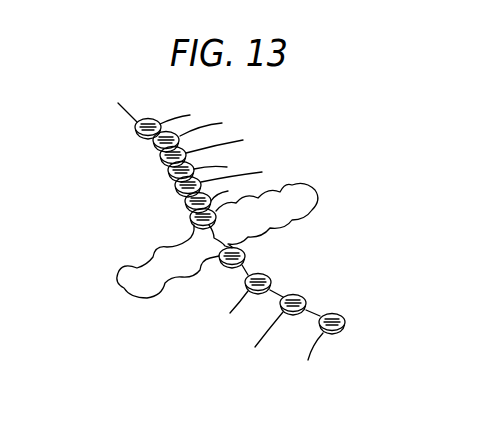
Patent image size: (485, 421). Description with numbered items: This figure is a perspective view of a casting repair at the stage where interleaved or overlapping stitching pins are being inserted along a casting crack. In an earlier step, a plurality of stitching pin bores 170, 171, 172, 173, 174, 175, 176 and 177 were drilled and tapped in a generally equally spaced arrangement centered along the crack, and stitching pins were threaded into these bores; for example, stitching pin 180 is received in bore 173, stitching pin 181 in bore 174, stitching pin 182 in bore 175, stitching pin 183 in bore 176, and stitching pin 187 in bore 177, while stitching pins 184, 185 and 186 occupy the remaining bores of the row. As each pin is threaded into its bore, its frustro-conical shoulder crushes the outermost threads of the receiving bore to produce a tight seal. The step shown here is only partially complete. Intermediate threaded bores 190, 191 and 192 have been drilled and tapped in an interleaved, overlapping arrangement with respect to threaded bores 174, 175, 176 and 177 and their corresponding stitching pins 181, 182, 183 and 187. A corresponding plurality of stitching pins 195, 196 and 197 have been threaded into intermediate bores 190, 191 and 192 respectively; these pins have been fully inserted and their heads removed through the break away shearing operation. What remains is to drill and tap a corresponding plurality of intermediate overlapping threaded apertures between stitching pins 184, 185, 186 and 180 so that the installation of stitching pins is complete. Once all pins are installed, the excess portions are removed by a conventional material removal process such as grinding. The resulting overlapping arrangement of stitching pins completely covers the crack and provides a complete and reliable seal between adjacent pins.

The stitching pin bore 170 is at (301, 357).
The stitching pin bore 171 is at (256, 340).
The stitching pin bore 172 is at (216, 317).
The stitching pin bore 173 is at (222, 264).
The stitching pin bore 174 is at (192, 224).
The stitching pin bore 175 is at (175, 189).
The stitching pin bore 176 is at (160, 157).
The stitching pin bore 177 is at (135, 130).
The stitching pin 180 is at (245, 256).
The stitching pin 181 is at (288, 187).
The stitching pin 182 is at (248, 169).
The stitching pin 183 is at (230, 142).
The stitching pin 184 is at (345, 318).
The stitching pin 185 is at (302, 296).
The stitching pin 186 is at (268, 275).
The stitching pin 187 is at (192, 110).
The intermediate threaded bore 190 is at (185, 205).
The intermediate threaded bore 191 is at (168, 172).
The intermediate threaded bore 192 is at (153, 142).
The stitching pin 195 is at (235, 191).
The stitching pin 196 is at (227, 166).
The stitching pin 197 is at (218, 125).